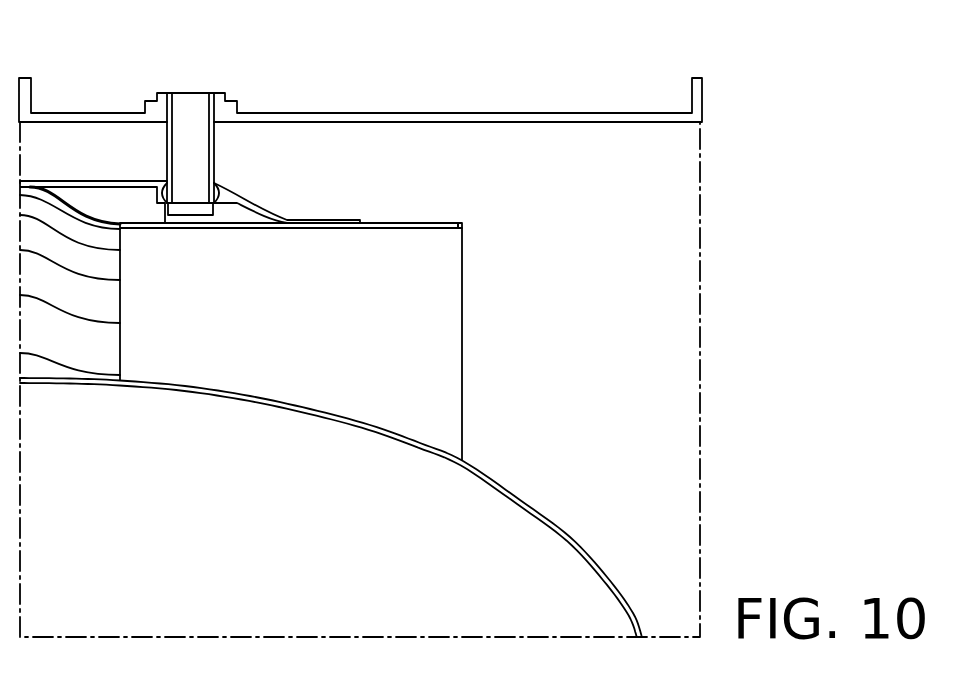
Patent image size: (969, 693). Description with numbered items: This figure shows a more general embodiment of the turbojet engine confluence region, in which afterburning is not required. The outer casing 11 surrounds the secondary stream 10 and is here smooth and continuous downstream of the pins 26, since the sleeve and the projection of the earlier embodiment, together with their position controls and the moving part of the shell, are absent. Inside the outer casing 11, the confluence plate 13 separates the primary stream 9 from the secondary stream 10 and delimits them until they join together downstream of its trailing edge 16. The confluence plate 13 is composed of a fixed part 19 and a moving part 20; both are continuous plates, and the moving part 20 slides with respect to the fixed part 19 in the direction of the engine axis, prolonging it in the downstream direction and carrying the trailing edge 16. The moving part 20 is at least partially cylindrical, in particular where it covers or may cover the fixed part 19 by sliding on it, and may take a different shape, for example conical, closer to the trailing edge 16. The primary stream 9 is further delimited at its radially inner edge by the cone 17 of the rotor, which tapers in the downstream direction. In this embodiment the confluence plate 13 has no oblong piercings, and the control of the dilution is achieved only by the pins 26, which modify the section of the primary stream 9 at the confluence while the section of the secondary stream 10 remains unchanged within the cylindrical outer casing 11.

The primary stream 9 is at (291, 341).
The secondary stream 10 is at (457, 205).
The outer casing 11 is at (407, 113).
The confluence plate 13 is at (265, 252).
The trailing edge 16 is at (458, 229).
The cone 17 is at (485, 477).
The fixed part 19 is at (232, 222).
The moving part 20 is at (382, 228).
The pins 26 is at (185, 93).